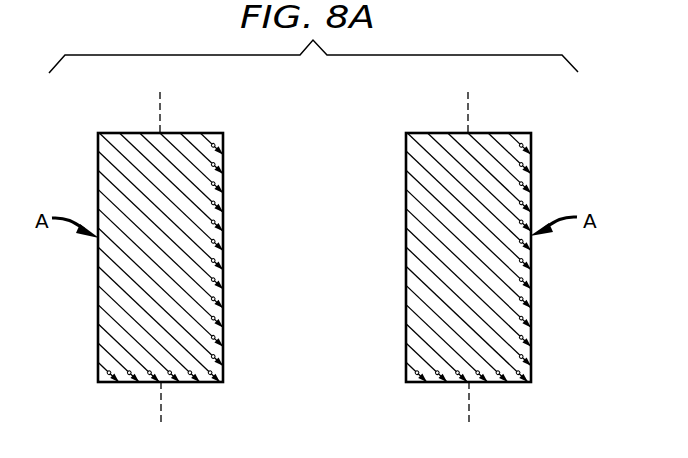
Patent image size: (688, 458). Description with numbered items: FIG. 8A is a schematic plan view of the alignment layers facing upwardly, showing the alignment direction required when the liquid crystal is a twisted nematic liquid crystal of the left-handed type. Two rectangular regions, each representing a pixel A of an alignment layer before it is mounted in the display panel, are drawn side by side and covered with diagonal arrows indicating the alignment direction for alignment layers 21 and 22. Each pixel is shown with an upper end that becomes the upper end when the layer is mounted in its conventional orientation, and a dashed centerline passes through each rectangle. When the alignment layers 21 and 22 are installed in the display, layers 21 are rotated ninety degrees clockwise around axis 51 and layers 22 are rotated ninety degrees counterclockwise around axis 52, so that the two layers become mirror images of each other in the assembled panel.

The alignment layer 21 is at (406, 250).
The alignment layer 22 is at (223, 243).
The axis 51 is at (470, 403).
The axis 52 is at (163, 403).